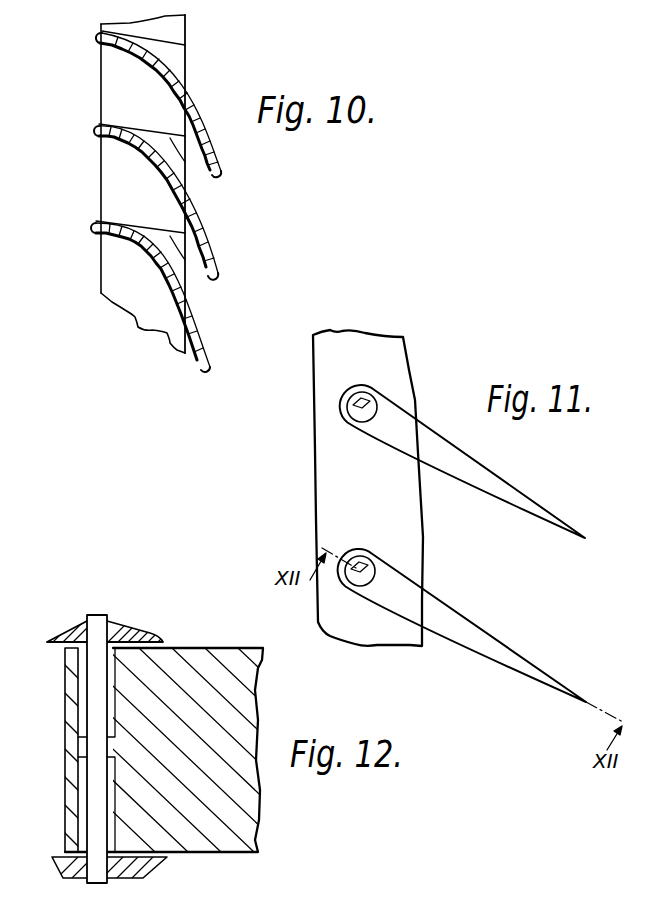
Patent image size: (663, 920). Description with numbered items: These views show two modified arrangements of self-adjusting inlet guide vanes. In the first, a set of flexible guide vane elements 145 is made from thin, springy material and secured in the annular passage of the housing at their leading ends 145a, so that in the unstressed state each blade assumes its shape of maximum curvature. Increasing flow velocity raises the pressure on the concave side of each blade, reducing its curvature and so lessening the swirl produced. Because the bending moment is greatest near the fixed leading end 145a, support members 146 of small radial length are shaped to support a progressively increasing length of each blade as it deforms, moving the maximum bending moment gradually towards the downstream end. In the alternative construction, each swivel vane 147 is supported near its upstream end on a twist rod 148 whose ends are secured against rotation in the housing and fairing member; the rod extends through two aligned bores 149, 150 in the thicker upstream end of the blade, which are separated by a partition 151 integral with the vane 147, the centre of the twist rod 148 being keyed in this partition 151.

In FIG. 10, the guide vane element 145 is at (224, 167).
In FIG. 10, the leading end 145a is at (98, 129).
In FIG. 10, the support member 146 is at (185, 170).
In FIG. 11, the vane 147 is at (488, 473).
In FIG. 12, the vane 147 is at (225, 655).
In FIG. 11, the twist rod 148 is at (378, 557).
In FIG. 12, the twist rod 148 is at (98, 622).
In FIG. 11, the bore 149 is at (368, 428).
In FIG. 12, the bore 149 is at (82, 653).
In FIG. 12, the bore 150 is at (115, 870).
In FIG. 12, the partition 151 is at (75, 748).